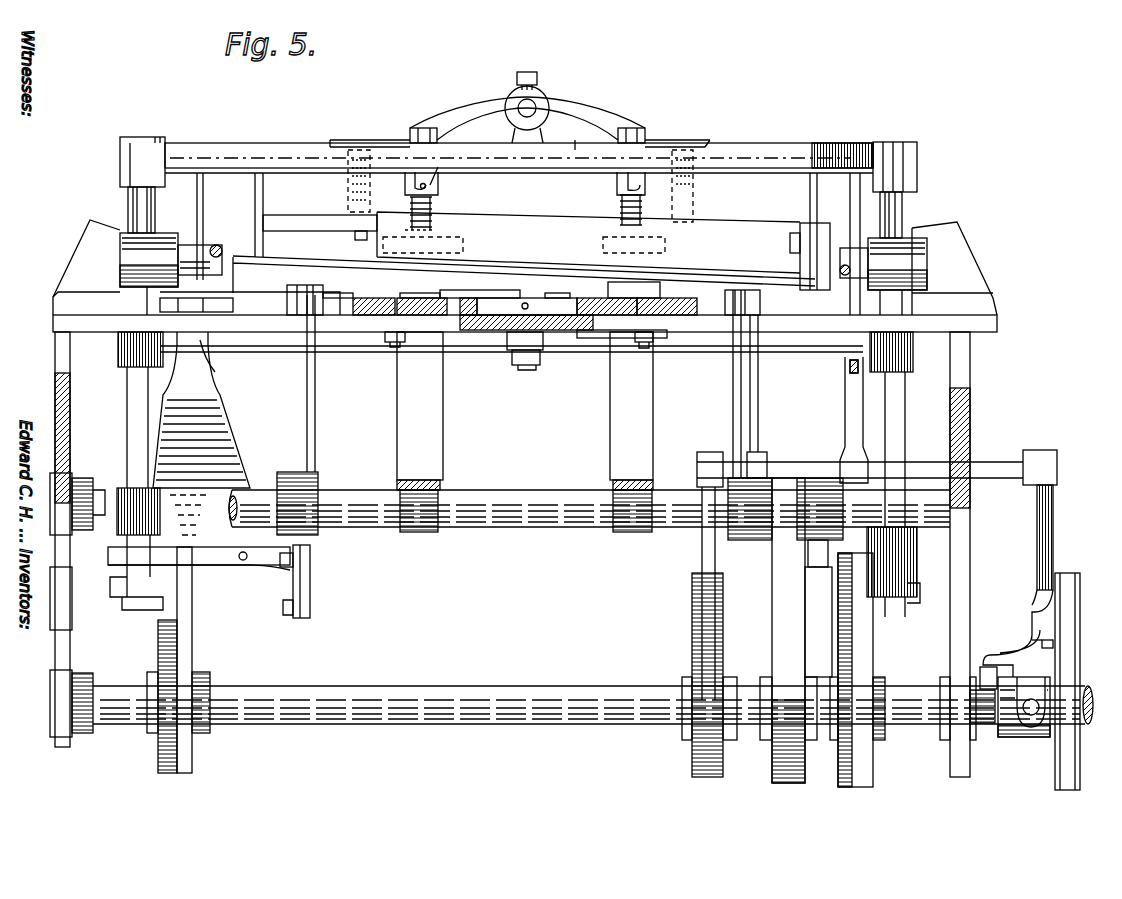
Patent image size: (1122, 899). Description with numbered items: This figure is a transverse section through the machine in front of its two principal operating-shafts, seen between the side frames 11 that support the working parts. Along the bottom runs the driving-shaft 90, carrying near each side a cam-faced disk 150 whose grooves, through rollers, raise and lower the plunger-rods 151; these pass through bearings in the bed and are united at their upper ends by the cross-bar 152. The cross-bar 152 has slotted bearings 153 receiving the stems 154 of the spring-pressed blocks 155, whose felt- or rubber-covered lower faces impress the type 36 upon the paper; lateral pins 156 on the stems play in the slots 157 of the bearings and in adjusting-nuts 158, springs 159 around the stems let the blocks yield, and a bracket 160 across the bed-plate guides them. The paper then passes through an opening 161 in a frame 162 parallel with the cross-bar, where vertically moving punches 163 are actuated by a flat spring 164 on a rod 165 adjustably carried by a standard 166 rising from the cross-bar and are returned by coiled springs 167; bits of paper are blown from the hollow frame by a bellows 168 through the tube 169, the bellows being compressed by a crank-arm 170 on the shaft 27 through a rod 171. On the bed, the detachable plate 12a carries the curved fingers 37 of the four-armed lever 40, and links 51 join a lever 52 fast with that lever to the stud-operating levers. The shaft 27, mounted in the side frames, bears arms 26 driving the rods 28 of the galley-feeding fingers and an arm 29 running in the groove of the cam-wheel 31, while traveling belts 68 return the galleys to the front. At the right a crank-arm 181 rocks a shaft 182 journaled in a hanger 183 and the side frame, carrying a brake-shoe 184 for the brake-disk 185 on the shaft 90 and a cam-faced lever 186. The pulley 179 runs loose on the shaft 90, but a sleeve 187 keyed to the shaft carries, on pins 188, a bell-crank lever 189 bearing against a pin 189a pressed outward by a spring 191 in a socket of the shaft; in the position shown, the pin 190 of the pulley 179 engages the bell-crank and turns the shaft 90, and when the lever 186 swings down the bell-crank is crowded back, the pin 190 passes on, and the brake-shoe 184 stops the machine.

The side frames 11 is at (55, 436).
The detachable plate 12a is at (500, 338).
The arms or levers 26 is at (315, 373).
The shaft 27 is at (520, 490).
The rods 28 is at (300, 293).
The arm 29 is at (822, 567).
The cam-wheel 31 is at (772, 619).
The type 36 is at (378, 298).
The curved fingers 37 is at (470, 290).
The four-armed lever 40 is at (525, 297).
The links 51 is at (393, 344).
The lever 52 is at (600, 340).
The traveling belts 68 is at (397, 455).
The driving-shaft 90 is at (476, 686).
The cam-faced disks 150 is at (187, 616).
The plunger-rods 151 is at (127, 443).
The cross-bar 152 is at (250, 148).
The slotted bearings 153 is at (438, 186).
The stems 154 is at (618, 202).
The spring-pressed blocks 155 is at (448, 244).
The lateral pins 156 is at (650, 225).
The slots 157 is at (618, 172).
The adjusting-nuts 158 is at (422, 128).
The springs 159 is at (450, 204).
The bracket 160 is at (603, 251).
The opening 161 is at (313, 222).
The frame 162 is at (237, 200).
The punches 163 is at (361, 232).
The flat spring 164 is at (505, 104).
The rod 165 is at (540, 106).
The standard 166 is at (540, 132).
The coiled springs 167 is at (695, 185).
The bellows 168 is at (235, 440).
The tube 169 is at (208, 347).
The crank-arm 170 is at (305, 568).
The rod 171 is at (292, 590).
The pulley 179 is at (1080, 632).
The crank-arm 181 is at (845, 430).
The shaft 182 is at (930, 462).
The hanger 183 is at (758, 400).
The brake-shoe 184 is at (702, 546).
The brake-disk 185 is at (692, 622).
The cam-faced lever 186 is at (1053, 548).
The sleeve 187 is at (1032, 737).
The pins 188 is at (1027, 712).
The bell-crank lever 189 is at (1036, 632).
The pin 189a is at (980, 672).
The pin 190 is at (1042, 645).
The spring 191 is at (985, 725).